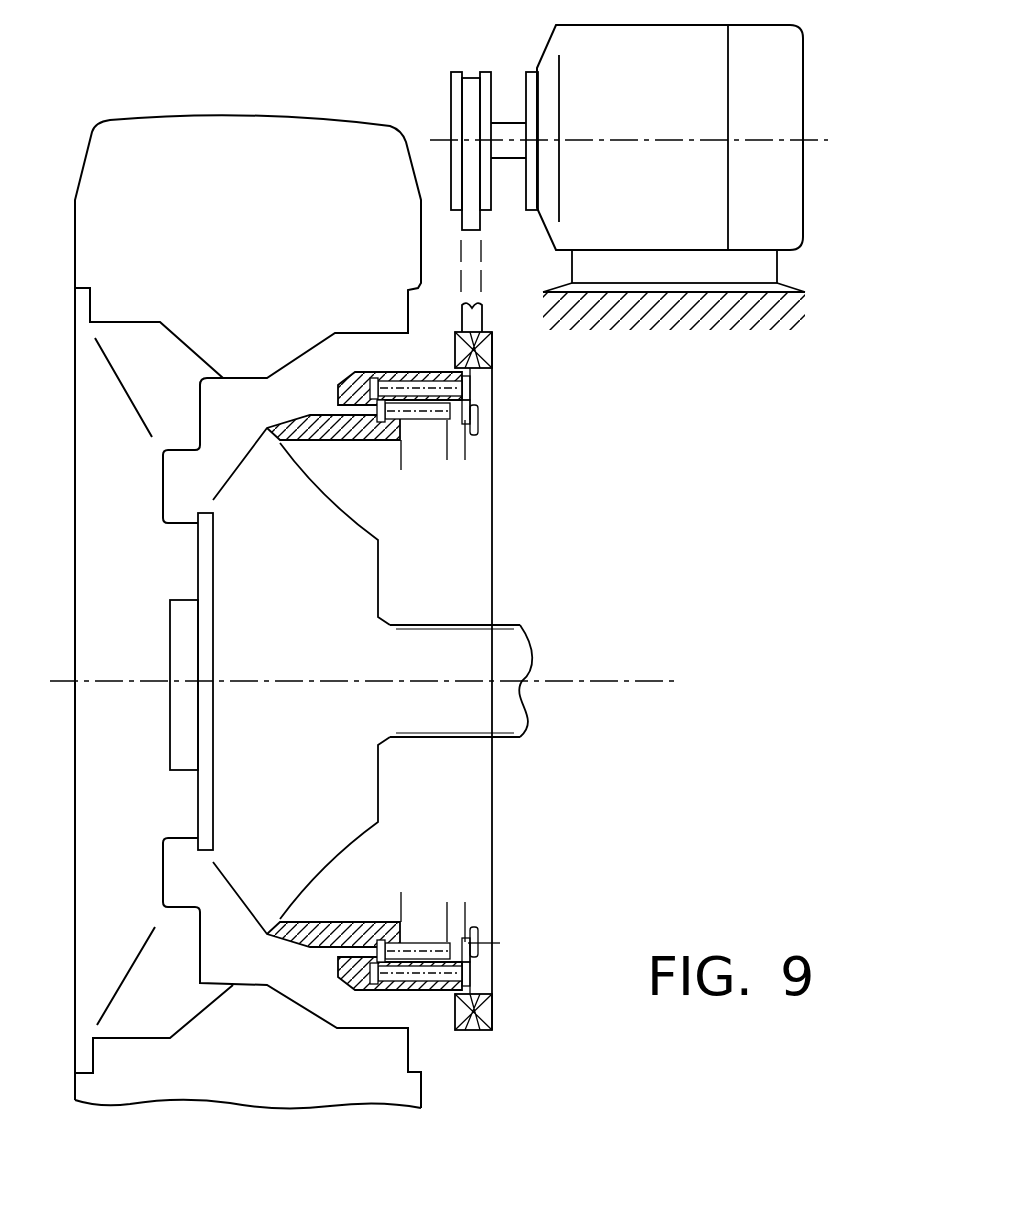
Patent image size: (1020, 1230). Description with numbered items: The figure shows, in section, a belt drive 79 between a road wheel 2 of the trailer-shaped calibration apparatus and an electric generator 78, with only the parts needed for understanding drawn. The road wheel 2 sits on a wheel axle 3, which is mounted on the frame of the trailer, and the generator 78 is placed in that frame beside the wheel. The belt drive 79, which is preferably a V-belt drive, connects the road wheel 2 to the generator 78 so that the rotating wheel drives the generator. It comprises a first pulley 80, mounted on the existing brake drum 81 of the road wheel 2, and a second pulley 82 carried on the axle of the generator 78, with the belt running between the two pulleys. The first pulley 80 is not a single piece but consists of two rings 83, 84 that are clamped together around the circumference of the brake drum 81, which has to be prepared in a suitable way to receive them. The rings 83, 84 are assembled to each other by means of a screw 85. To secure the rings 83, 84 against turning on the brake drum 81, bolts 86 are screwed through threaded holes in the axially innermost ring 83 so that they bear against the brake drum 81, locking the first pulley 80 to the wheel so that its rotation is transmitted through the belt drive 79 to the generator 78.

The road wheel 2 is at (165, 840).
The wheel axle 3 is at (536, 714).
The electric generator 78 is at (658, 126).
The belt drive 79 is at (482, 275).
The first pulley 80 is at (435, 838).
The brake drum 81 is at (350, 438).
The second pulley 82 is at (447, 150).
The ring 83 is at (497, 374).
The ring 84 is at (350, 374).
The screw 85 is at (472, 392).
The bolt 86 is at (472, 432).